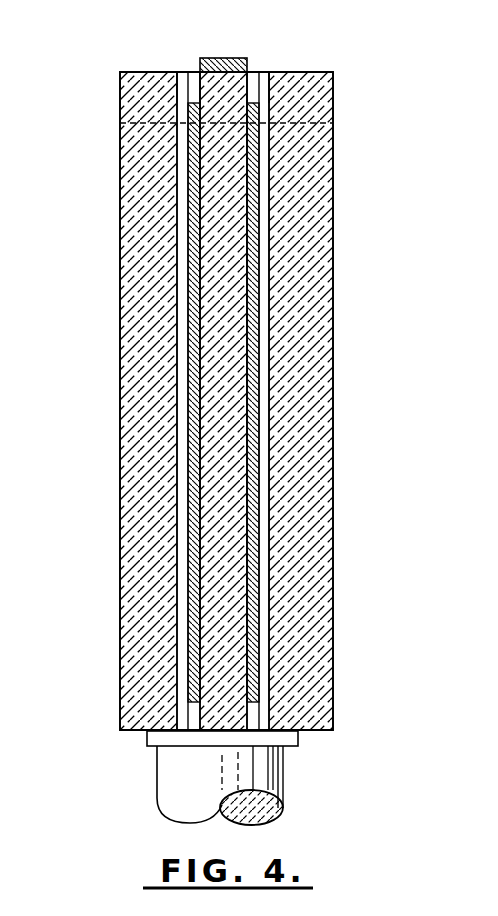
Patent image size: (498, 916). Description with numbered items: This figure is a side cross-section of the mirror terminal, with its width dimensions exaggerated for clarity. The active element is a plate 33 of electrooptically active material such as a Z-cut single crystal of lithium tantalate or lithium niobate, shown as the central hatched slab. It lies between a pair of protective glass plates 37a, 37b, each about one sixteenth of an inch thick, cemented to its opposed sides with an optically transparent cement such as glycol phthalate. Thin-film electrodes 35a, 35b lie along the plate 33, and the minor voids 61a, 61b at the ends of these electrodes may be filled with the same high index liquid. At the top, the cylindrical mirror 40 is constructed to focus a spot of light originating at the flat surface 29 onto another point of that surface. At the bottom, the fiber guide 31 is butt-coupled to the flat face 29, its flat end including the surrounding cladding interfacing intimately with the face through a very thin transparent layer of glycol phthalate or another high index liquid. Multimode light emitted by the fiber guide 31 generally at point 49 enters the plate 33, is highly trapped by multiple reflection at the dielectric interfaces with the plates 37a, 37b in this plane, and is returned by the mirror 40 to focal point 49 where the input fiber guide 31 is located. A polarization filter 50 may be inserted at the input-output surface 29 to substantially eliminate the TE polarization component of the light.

The flat face 29 is at (135, 730).
The fiber guide 31 is at (283, 785).
The active plate 33 is at (233, 478).
The thin-film electrode 35a is at (187, 297).
The thin-film electrode 35b is at (258, 255).
The protective glass plate 37a is at (120, 505).
The protective glass plate 37b is at (333, 638).
The cylindrical mirror 40 is at (232, 58).
The focal point 49 is at (216, 723).
The polarization filter 50 is at (298, 744).
The void 61a is at (197, 80).
The void 61b is at (262, 82).